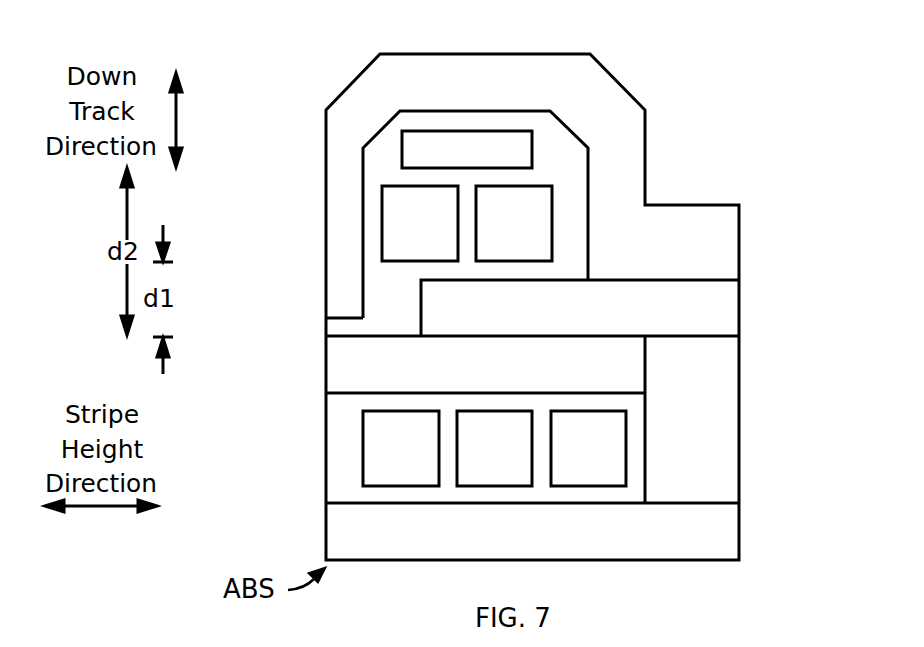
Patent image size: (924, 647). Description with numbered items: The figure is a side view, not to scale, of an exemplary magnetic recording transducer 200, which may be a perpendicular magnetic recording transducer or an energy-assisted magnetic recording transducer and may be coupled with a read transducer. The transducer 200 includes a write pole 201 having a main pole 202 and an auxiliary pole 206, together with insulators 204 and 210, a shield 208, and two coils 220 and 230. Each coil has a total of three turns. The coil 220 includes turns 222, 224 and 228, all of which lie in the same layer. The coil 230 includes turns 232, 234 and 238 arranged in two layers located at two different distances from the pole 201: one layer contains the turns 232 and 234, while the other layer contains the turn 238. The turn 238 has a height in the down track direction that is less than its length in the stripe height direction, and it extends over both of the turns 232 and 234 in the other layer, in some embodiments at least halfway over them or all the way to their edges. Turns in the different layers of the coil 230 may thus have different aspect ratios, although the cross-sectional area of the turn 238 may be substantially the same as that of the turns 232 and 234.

The magnetic recording transducer 200 is at (180, 48).
The write pole 201 is at (275, 355).
The main pole 202 is at (326, 355).
The insulator 204 is at (326, 447).
The auxiliary pole 206 is at (739, 317).
The shield 208 is at (326, 203).
The insulator 210 is at (326, 328).
The coil 220 is at (360, 439).
The turn 222 is at (422, 486).
The turn 224 is at (500, 486).
The turn 228 is at (626, 448).
The coil 230 is at (557, 167).
The turn 232 is at (398, 186).
The turn 234 is at (552, 243).
The turn 238 is at (438, 131).